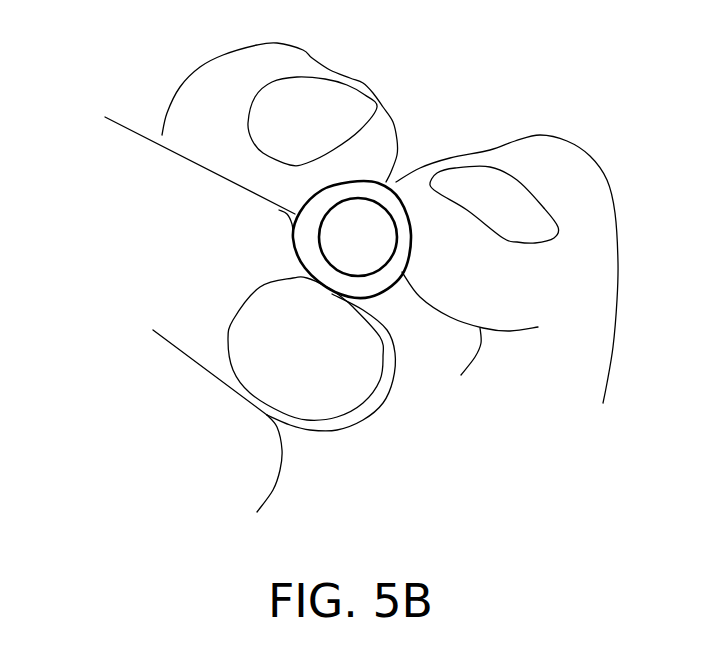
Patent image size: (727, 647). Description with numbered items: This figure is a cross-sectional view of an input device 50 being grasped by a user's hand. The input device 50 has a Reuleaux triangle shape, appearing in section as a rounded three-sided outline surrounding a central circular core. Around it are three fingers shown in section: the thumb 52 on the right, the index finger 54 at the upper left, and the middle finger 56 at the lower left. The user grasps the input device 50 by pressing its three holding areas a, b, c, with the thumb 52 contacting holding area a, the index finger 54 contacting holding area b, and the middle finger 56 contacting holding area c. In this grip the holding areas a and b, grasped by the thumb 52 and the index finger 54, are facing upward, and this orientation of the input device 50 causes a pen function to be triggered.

The input device 50 is at (393, 181).
The thumb 52 is at (567, 173).
The index finger 54 is at (218, 92).
The middle finger 56 is at (193, 263).
The holding area a is at (420, 240).
The holding area b is at (336, 178).
The holding area c is at (330, 296).